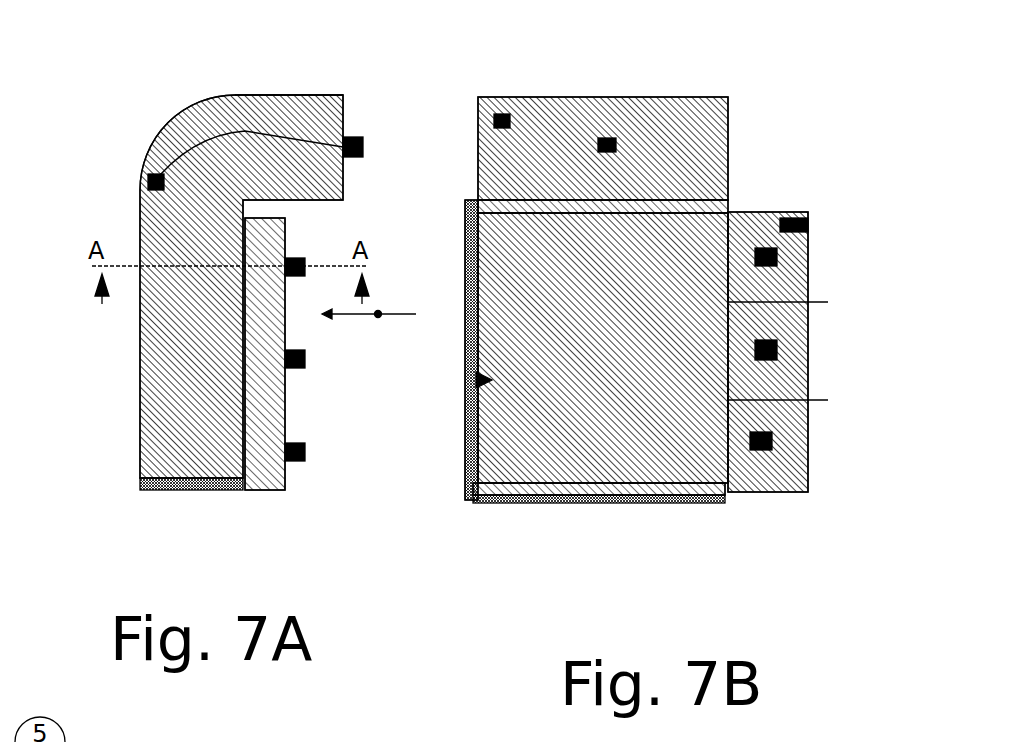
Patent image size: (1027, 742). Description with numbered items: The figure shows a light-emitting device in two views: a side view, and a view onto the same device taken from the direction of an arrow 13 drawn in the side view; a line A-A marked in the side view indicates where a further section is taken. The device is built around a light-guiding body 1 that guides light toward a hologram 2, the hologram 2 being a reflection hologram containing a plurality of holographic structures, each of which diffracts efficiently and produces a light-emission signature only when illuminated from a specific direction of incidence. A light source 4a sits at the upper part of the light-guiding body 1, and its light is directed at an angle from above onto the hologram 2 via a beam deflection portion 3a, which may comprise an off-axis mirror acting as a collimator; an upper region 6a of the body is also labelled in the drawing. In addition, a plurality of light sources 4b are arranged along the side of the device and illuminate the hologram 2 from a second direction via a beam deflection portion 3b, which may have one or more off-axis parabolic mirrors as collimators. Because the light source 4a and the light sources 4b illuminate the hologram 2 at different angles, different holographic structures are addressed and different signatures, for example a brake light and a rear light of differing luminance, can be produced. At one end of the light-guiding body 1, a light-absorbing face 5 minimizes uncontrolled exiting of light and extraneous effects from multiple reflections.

In FIG. 7A, the light-guiding body 1 is at (112, 284).
In FIG. 7A, the hologram 2 is at (306, 360).
In FIG. 7B, the hologram 2 is at (476, 381).
In FIG. 7A, the beam deflection portion 3a is at (160, 146).
In FIG. 7B, the beam deflection portion 3a is at (482, 112).
In FIG. 7B, the beam deflection portion 3b is at (812, 412).
In FIG. 7A, the light source 4a is at (355, 152).
In FIG. 7A, the light sources 4b is at (289, 300).
In FIG. 7B, the light sources 4b is at (419, 612).
In FIG. 7A, the face 5 is at (120, 492).
In FIG. 7B, the face 5 is at (548, 500).
In FIG. 7A, the top portion 6a is at (300, 96).
In FIG. 7A, the arrow 13 is at (378, 314).